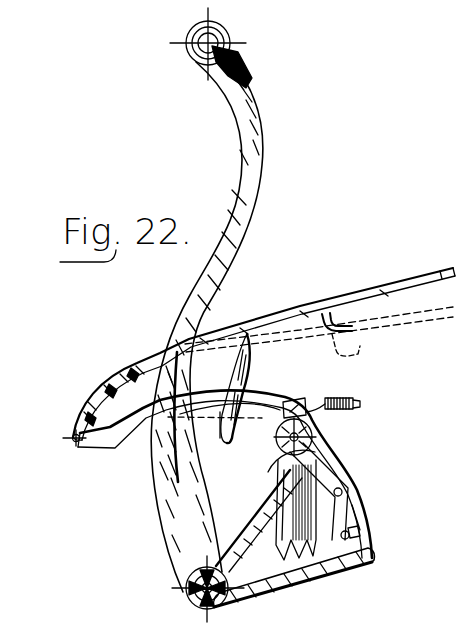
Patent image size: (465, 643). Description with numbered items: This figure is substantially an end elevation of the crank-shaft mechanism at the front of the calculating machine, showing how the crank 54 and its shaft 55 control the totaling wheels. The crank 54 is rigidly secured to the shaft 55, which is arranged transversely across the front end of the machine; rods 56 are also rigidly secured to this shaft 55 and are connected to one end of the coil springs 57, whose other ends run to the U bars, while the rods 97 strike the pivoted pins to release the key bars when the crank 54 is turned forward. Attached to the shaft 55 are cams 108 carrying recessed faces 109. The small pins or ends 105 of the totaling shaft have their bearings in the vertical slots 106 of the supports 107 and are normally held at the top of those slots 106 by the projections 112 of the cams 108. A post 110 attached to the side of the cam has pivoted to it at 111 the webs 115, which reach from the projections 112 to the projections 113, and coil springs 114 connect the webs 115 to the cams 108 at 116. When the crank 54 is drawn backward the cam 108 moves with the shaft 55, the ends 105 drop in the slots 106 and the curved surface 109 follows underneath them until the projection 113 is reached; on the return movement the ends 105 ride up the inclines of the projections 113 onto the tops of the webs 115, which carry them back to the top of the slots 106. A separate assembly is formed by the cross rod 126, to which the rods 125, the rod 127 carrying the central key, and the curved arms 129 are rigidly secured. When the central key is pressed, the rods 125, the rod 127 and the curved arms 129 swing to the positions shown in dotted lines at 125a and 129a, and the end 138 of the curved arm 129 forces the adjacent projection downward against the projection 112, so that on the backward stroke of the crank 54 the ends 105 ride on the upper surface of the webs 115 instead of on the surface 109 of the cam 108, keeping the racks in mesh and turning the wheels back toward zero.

The crank 54 is at (259, 160).
The shaft 55 is at (186, 596).
The rods 56 is at (285, 401).
The coil springs 57 is at (331, 398).
The rods 97 is at (233, 368).
The small pins 105 is at (312, 428).
The vertical slots 106 is at (312, 439).
The supports 107 is at (280, 532).
The cams 108 is at (266, 588).
The recessed faces 109 is at (353, 514).
The post 110 is at (346, 500).
The pivot 111 is at (342, 488).
The projections 112 is at (283, 442).
The projections 113 is at (371, 562).
The coil springs 114 is at (360, 532).
The webs 115 is at (322, 460).
The connection point 116 is at (341, 535).
The rods 125 is at (332, 312).
The rods in depressed position 125a is at (346, 342).
The cross rod 126 is at (72, 435).
The rod 127 is at (104, 394).
The curved arms 129 is at (142, 410).
The curved arms in depressed position 129a is at (243, 399).
The end of curved arm 138 is at (371, 408).